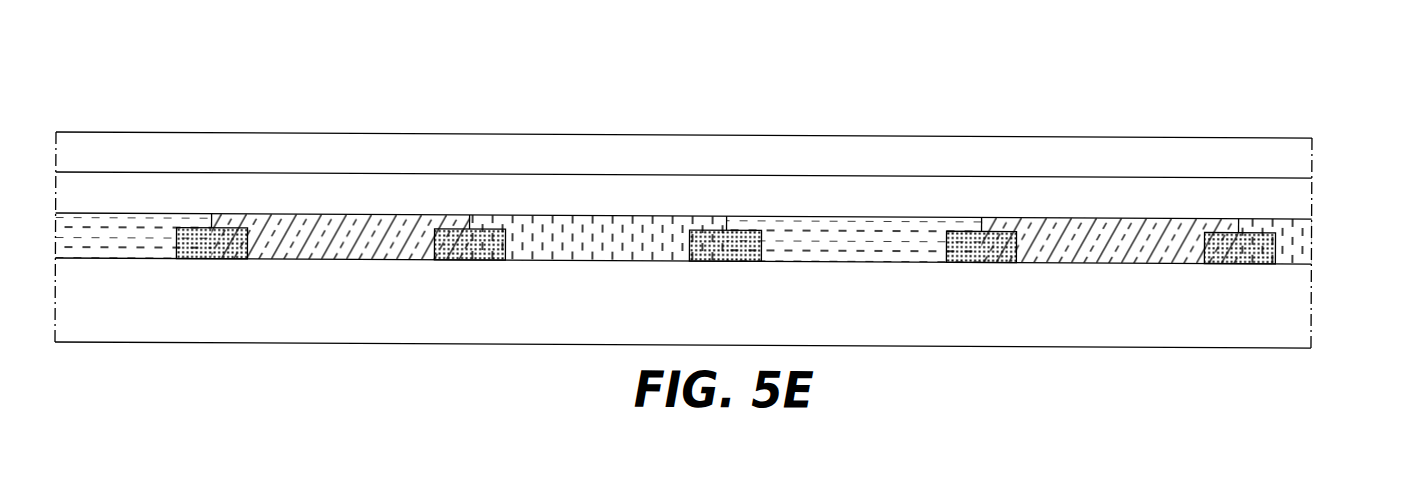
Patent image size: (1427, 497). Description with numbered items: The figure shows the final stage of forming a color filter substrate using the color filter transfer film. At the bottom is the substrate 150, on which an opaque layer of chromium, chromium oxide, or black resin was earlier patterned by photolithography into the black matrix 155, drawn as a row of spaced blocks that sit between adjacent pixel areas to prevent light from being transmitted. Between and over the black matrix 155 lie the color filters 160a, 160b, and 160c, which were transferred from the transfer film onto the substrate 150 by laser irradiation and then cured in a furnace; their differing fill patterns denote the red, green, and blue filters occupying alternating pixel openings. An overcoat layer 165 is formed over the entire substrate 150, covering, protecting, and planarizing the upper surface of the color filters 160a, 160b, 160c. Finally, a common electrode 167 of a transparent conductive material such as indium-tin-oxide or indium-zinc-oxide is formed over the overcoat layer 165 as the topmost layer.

The substrate 150 is at (704, 310).
The black matrix 155 is at (977, 246).
The first color filter pattern 160a is at (354, 235).
The second color filter pattern 160b is at (608, 235).
The third color filter pattern 160c is at (135, 235).
The overcoat layer 165 is at (1298, 192).
The common electrode 167 is at (1298, 148).